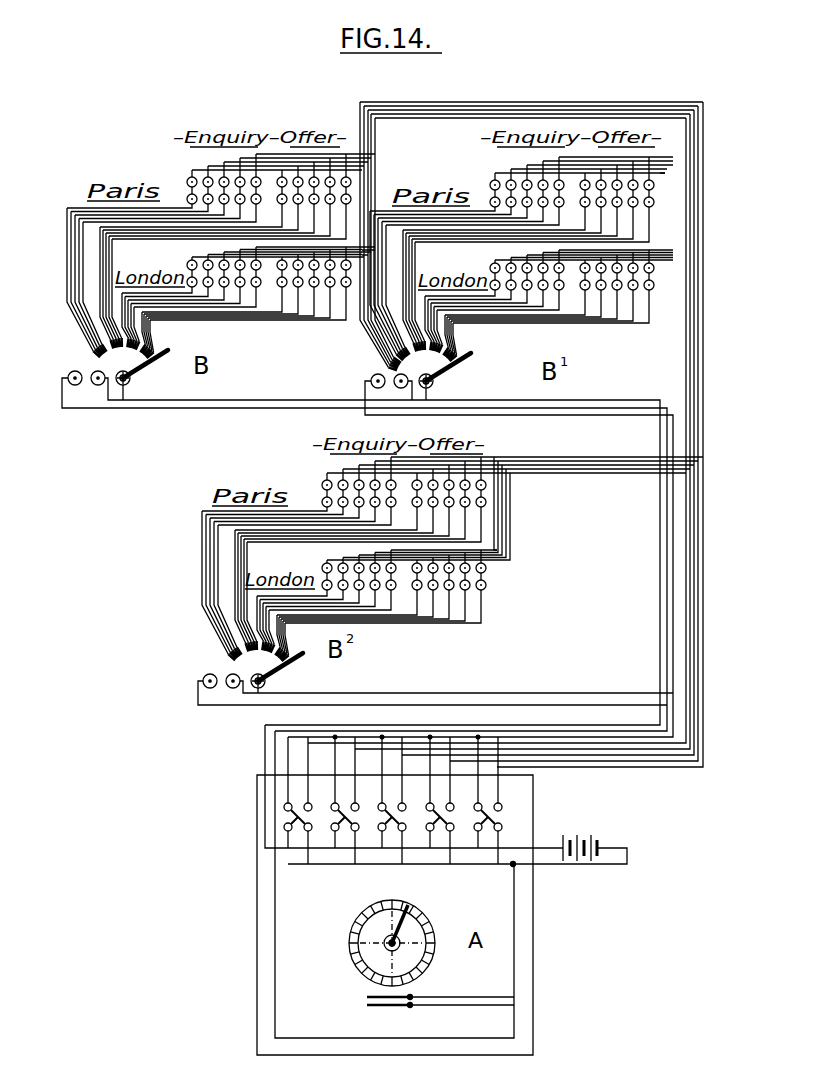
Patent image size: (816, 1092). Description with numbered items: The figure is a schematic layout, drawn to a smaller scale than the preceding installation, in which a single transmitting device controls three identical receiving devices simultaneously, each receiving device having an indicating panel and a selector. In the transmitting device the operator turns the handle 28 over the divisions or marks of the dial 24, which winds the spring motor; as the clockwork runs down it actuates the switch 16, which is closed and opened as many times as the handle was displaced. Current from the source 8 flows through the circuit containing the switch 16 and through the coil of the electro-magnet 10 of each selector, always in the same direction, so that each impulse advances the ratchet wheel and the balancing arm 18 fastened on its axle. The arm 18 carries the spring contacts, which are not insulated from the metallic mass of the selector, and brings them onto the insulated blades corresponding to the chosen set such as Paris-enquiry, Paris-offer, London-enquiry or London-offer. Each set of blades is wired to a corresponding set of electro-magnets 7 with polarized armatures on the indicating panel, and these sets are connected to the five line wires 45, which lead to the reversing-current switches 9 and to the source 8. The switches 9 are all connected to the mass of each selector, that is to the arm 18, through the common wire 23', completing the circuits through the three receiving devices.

The electro-magnets with polarized armatures 7 is at (257, 202).
The source of current 8 is at (571, 838).
The reversing-current switches 9 is at (381, 809).
The electro-magnet 10 is at (95, 372).
The switch 16 is at (371, 1003).
The balancing arm 18 is at (140, 376).
The common wire 23' is at (367, 557).
The dial 24 is at (352, 957).
The handle 28 is at (400, 939).
The line wires 45 is at (568, 100).